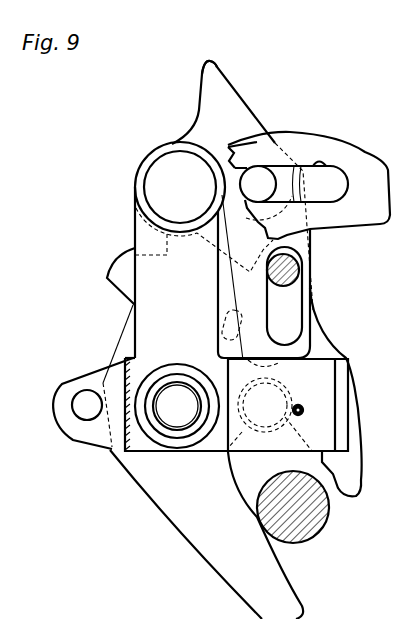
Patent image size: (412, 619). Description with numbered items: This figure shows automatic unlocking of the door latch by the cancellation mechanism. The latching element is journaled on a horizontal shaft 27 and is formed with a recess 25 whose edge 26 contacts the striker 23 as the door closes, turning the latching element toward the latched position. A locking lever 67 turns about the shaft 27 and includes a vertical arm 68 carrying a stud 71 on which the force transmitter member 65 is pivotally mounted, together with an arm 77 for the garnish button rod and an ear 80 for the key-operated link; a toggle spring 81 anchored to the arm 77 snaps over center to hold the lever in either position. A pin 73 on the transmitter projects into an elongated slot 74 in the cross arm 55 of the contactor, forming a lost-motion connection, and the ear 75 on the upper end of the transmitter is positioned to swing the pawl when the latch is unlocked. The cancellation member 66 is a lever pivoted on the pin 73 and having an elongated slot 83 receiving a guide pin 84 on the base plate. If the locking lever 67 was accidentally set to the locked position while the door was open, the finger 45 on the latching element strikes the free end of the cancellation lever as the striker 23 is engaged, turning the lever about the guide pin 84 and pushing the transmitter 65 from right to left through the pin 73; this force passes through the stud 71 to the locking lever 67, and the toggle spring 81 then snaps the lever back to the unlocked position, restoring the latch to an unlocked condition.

The ear 75 is at (218, 67).
The force transmitter member 65 is at (236, 85).
The stud 71 is at (170, 160).
The pin 73 is at (255, 170).
The elongated slot 74 is at (323, 160).
The cross arm 55 is at (367, 156).
The vertical arm 68 is at (134, 231).
The locking lever 67 is at (135, 247).
The finger 45 is at (226, 316).
The cancellation member 66 is at (311, 254).
The guide pin 84 is at (299, 276).
The elongated slot 83 is at (297, 307).
The ear 80 is at (83, 380).
The shaft 27 is at (177, 387).
The toggle spring 81 is at (277, 383).
The arm 77 is at (349, 390).
The recess 25 is at (358, 497).
The striker 23 is at (327, 513).
The edge 26 is at (289, 578).